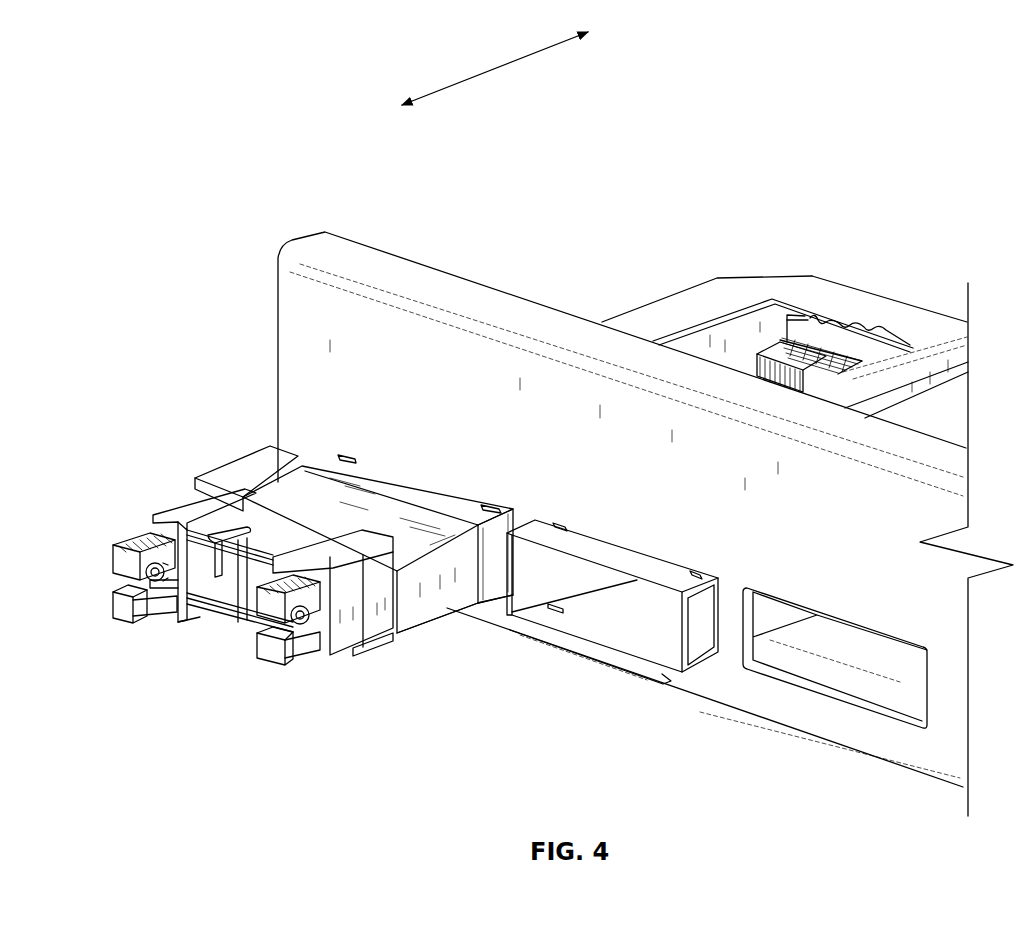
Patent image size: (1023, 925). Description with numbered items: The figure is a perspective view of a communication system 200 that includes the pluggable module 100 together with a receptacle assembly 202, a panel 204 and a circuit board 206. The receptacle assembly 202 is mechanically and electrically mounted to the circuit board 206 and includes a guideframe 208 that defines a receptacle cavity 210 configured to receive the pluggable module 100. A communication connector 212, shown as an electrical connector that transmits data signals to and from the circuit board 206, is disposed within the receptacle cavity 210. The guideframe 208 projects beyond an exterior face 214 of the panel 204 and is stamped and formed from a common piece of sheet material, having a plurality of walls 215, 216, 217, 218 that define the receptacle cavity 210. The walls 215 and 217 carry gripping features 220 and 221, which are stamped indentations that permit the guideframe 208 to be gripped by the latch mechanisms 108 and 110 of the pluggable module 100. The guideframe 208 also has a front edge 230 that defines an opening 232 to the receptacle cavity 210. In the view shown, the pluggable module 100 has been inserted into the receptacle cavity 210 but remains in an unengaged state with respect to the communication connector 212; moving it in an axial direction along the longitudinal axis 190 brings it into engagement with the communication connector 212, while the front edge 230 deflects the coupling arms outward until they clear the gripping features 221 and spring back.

The pluggable module 100 is at (426, 637).
The latch mechanism 108 is at (110, 642).
The latch mechanism 110 is at (267, 682).
The longitudinal axis 190 is at (495, 58).
The communication system 200 is at (870, 72).
The receptacle assembly 202 is at (852, 258).
The panel 204 is at (340, 252).
The circuit board 206 is at (652, 300).
The guideframe 208 is at (920, 322).
The receptacle cavity 210 is at (744, 342).
The communication connector 212 is at (810, 332).
The exterior face 214 is at (467, 416).
The wall 215 is at (434, 496).
The wall 216 is at (491, 576).
The wall 217 is at (472, 614).
The wall 218 is at (288, 457).
The gripping feature 220 is at (343, 455).
The gripping feature 221 is at (499, 505).
The front edge 230 is at (637, 582).
The opening 232 is at (588, 668).